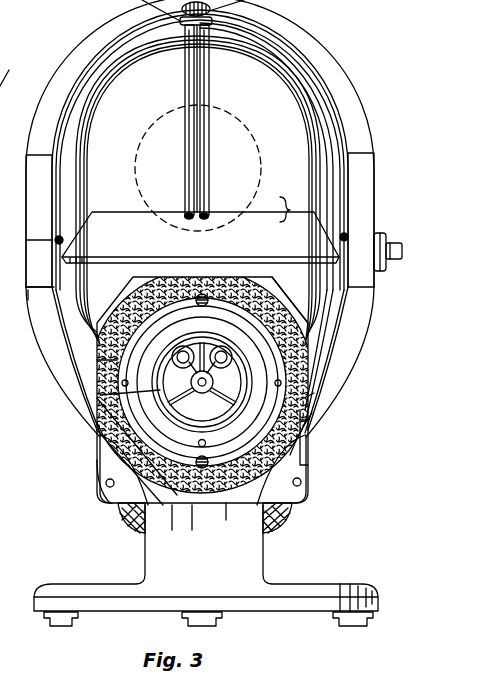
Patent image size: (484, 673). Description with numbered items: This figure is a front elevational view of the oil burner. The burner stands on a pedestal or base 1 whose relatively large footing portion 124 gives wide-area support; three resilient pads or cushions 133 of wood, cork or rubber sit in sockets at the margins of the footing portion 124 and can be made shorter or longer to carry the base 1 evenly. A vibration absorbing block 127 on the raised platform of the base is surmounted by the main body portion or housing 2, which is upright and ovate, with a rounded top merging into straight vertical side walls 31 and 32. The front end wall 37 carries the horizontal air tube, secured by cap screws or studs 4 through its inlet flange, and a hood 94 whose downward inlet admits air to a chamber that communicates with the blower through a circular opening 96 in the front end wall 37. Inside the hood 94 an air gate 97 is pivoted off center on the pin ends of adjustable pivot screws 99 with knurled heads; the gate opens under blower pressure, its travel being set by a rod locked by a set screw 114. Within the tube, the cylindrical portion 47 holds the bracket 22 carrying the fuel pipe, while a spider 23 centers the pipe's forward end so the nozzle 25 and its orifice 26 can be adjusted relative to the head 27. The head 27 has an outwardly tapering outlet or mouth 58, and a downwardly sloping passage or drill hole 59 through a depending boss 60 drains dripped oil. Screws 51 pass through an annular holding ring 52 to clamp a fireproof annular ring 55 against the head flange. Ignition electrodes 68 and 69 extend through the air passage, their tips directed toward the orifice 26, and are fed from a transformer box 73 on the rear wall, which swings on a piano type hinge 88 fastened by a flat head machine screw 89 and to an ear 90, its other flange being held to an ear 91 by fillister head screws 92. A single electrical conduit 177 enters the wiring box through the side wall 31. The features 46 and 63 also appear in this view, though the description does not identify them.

The pedestal or base 1 is at (54, 585).
The main body portion or housing 2 is at (292, 27).
The cap screws or studs 4 is at (97, 330).
The bracket 22 is at (105, 438).
The spider 23 is at (100, 402).
The nozzle 25 is at (207, 495).
The orifice 26 is at (202, 382).
The head 27 is at (210, 497).
The side wall 31 is at (375, 185).
The side wall 32 is at (26, 208).
The front end wall 37 is at (327, 311).
The block fastener 46 is at (26, 257).
The cylindrical portion 47 is at (27, 296).
The screws 51 is at (214, 292).
The annular holding ring 52 is at (117, 360).
The annular ring of fireproof fibrous material 55 is at (314, 393).
The outlet or mouth 58 is at (122, 512).
The passage or drill hole 59 is at (215, 544).
The depending boss 60 is at (280, 520).
The cover retaining tab 63 is at (95, 388).
The ignition electrode 68 is at (163, 372).
The ignition electrode 69 is at (237, 370).
The transformer box 73 is at (128, 531).
The piano type hinge 88 is at (307, 458).
The flat head machine screw 89 is at (301, 483).
The ear 90 is at (287, 490).
The ear 91 is at (101, 470).
The fillister head screws 92 is at (106, 484).
The hood 94 is at (115, 193).
The circular opening 96 is at (259, 143).
The air gate 97 is at (287, 201).
The adjustable pivot screws 99 is at (349, 233).
The set screw 114 is at (209, 52).
The footing portion 124 is at (380, 598).
The vibration absorbing block 127 is at (233, 520).
The pads or cushions 133 is at (58, 628).
The electrical conduit 177 is at (389, 272).